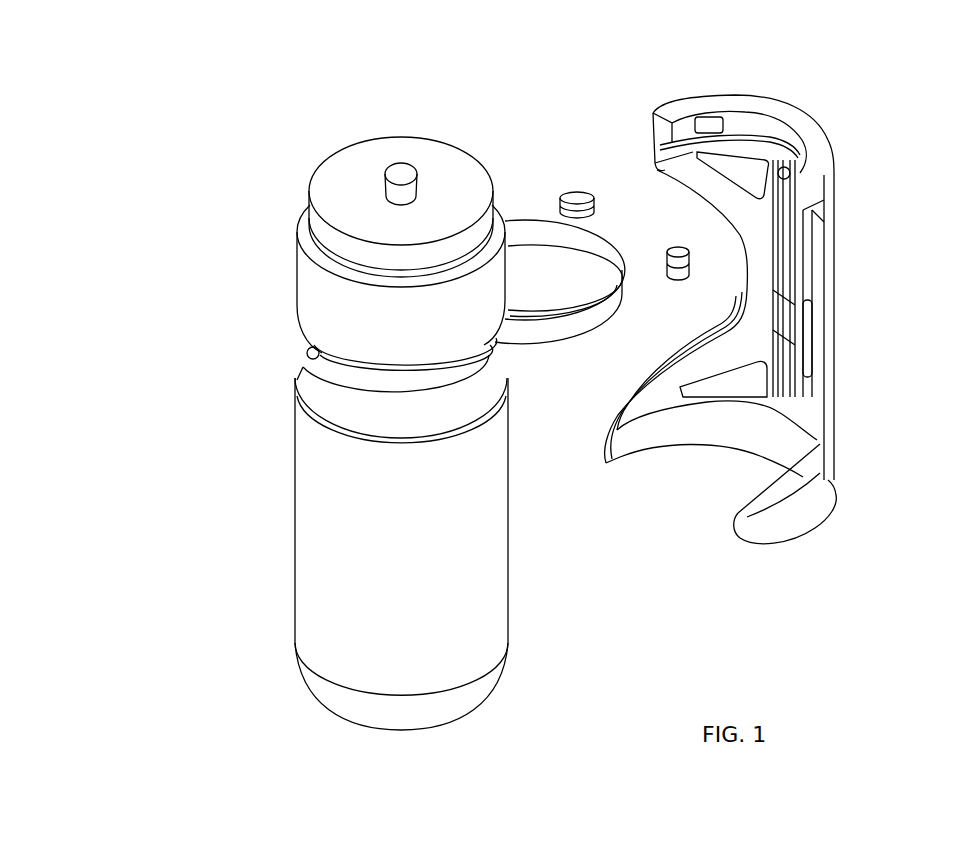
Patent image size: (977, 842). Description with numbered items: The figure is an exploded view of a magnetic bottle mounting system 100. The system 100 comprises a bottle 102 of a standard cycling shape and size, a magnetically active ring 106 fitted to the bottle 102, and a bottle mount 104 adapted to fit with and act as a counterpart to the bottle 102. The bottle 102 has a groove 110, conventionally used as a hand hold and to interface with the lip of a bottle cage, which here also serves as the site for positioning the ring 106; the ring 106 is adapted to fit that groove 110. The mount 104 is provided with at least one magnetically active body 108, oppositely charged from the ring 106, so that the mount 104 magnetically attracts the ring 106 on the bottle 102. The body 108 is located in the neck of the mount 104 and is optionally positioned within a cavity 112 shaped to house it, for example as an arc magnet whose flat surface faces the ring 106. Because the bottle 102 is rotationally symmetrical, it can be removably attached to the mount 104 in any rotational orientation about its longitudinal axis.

The magnetic bottle mounting system 100 is at (233, 158).
The bottle 102 is at (352, 561).
The bottle mount 104 is at (813, 148).
The magnetically active ring 106 is at (540, 327).
The magnetically active body 108 is at (672, 248).
The groove 110 is at (313, 355).
The cavity 112 is at (703, 120).